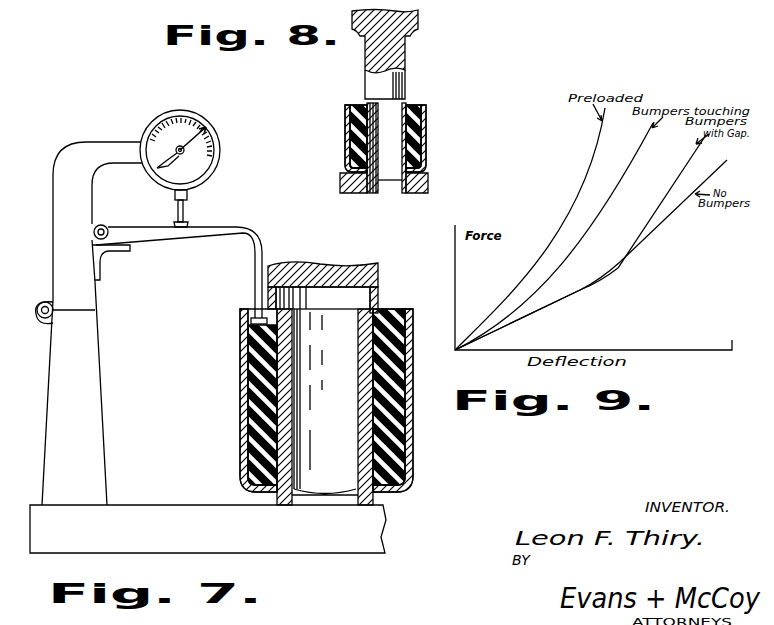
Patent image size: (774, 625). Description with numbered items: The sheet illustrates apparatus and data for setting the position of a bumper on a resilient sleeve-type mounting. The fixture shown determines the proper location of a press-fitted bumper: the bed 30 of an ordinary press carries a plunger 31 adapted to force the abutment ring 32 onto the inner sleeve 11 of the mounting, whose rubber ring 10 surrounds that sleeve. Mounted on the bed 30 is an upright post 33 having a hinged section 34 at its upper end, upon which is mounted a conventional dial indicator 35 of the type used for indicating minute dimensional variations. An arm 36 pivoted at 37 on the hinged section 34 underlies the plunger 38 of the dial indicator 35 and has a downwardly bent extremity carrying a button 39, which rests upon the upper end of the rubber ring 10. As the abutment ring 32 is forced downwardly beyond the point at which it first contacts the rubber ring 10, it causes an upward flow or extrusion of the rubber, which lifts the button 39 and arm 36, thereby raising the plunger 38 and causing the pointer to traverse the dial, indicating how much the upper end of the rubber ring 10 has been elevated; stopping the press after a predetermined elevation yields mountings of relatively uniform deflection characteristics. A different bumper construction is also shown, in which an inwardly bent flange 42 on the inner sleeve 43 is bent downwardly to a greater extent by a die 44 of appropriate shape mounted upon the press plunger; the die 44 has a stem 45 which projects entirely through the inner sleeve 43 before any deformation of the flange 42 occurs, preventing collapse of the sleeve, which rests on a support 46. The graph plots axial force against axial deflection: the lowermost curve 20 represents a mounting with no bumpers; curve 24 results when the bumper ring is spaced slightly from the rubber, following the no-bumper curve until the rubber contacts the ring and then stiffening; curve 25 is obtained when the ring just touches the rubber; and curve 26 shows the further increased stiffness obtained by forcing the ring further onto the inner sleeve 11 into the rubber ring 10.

In FIG. 7, the rubber ring 10 is at (243, 370).
In FIG. 7, the inner sleeve 11 is at (358, 340).
In FIG. 9, the lowermost curve 20 is at (655, 232).
In FIG. 9, the deflection curve 24 is at (677, 175).
In FIG. 9, the deflection curve 25 is at (637, 160).
In FIG. 9, the deflection curve 26 is at (594, 152).
In FIG. 7, the bed 30 is at (384, 516).
In FIG. 7, the plunger 31 is at (345, 268).
In FIG. 7, the abutment ring 32 is at (378, 300).
In FIG. 7, the upright post 33 is at (96, 366).
In FIG. 7, the hinged section 34 is at (53, 237).
In FIG. 7, the dial indicator 35 is at (220, 146).
In FIG. 7, the arm 36 is at (152, 232).
In FIG. 7, the pivot 37 is at (106, 227).
In FIG. 7, the plunger 38 is at (188, 225).
In FIG. 7, the button 39 is at (240, 326).
In FIG. 8, the inwardly bent flange 42 is at (408, 108).
In FIG. 8, the inner sleeve 43 is at (400, 150).
In FIG. 8, the die 44 is at (418, 14).
In FIG. 8, the stem 45 is at (405, 82).
In FIG. 8, the support 46 is at (428, 180).